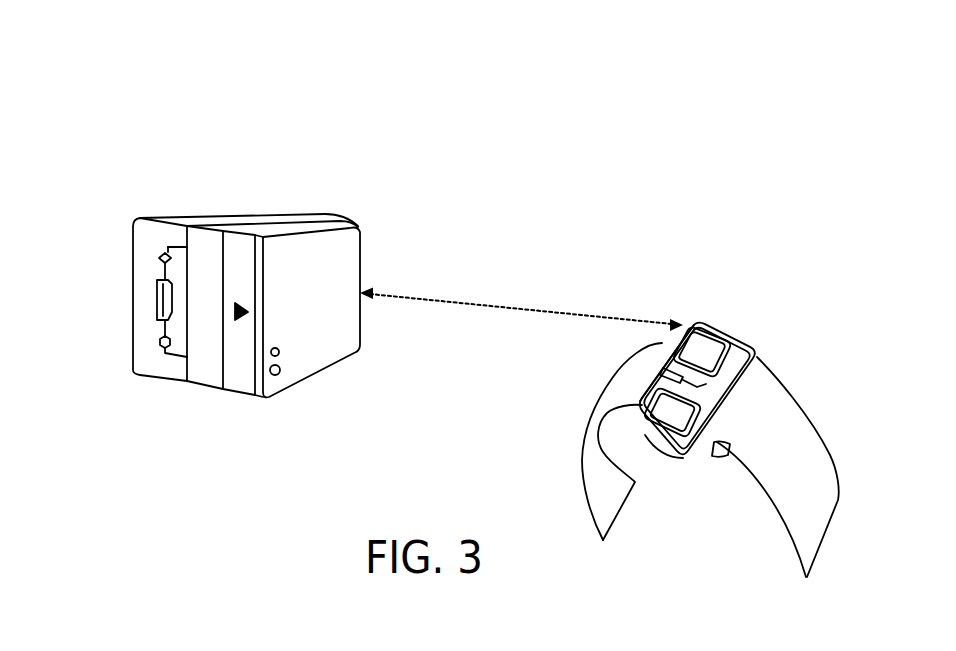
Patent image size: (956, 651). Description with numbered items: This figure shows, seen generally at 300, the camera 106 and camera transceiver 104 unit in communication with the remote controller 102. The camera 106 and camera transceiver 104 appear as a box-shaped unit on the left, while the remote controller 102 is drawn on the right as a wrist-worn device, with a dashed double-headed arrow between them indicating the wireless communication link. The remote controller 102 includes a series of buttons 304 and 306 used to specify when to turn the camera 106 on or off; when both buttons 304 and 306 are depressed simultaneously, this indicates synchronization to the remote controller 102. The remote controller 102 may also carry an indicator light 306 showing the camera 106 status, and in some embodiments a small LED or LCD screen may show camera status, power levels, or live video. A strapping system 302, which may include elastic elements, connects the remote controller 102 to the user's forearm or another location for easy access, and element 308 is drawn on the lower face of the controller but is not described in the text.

The camera and transceiver unit in communication with the remote controller 300 is at (63, 142).
The remote controller 102 is at (686, 313).
The camera transceiver 104 is at (361, 268).
The camera 106 is at (227, 215).
The strapping system 302 is at (828, 447).
The button 304 is at (732, 333).
The button 306 is at (663, 350).
The lower display 308 is at (650, 438).